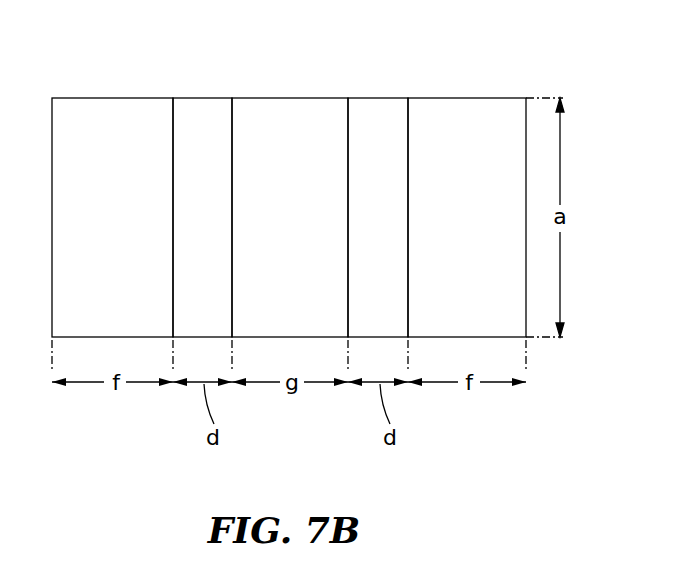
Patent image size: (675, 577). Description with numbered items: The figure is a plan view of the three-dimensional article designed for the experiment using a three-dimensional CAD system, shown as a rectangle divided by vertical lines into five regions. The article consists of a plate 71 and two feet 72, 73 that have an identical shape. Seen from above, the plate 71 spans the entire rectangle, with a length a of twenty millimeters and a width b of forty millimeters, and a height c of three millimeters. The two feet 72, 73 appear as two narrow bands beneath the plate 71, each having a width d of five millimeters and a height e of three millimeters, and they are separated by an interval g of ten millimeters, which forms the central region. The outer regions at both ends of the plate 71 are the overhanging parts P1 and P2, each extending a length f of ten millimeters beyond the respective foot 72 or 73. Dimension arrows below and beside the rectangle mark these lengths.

The overhanging part P1 is at (106, 115).
The foot 72 is at (195, 112).
The plate 71 is at (280, 100).
The foot 73 is at (380, 110).
The overhanging part P2 is at (468, 110).